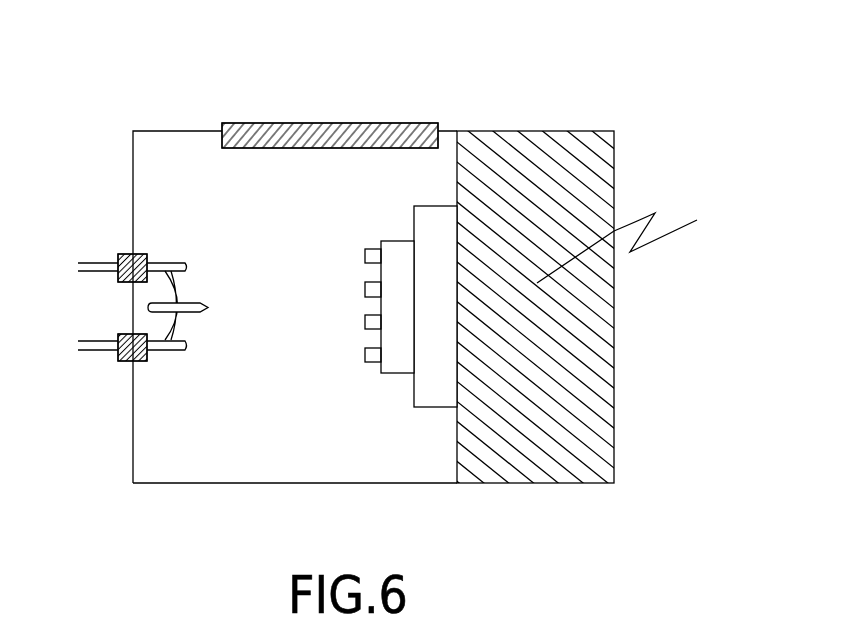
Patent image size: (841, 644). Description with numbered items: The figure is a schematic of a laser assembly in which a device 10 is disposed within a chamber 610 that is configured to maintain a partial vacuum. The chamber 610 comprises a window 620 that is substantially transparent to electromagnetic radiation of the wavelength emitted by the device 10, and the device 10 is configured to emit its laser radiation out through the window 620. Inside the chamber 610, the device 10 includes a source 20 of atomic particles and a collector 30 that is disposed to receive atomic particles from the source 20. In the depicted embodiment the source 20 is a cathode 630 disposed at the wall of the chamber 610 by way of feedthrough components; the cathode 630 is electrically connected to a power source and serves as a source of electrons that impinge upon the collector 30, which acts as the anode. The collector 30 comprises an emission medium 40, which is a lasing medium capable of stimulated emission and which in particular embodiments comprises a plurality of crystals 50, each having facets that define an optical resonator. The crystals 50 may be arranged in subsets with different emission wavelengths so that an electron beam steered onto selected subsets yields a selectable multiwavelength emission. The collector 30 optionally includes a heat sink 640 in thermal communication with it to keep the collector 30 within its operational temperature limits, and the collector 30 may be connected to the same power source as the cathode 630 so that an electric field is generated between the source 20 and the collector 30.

The device 10 is at (208, 192).
The source of atomic particles 20 is at (108, 215).
The collector 30 is at (417, 430).
The emission medium 40 is at (393, 217).
The crystals 50 is at (350, 363).
The chamber 610 is at (615, 360).
The window 620 is at (322, 122).
The cathode 630 is at (195, 362).
The heat sink 640 is at (631, 235).